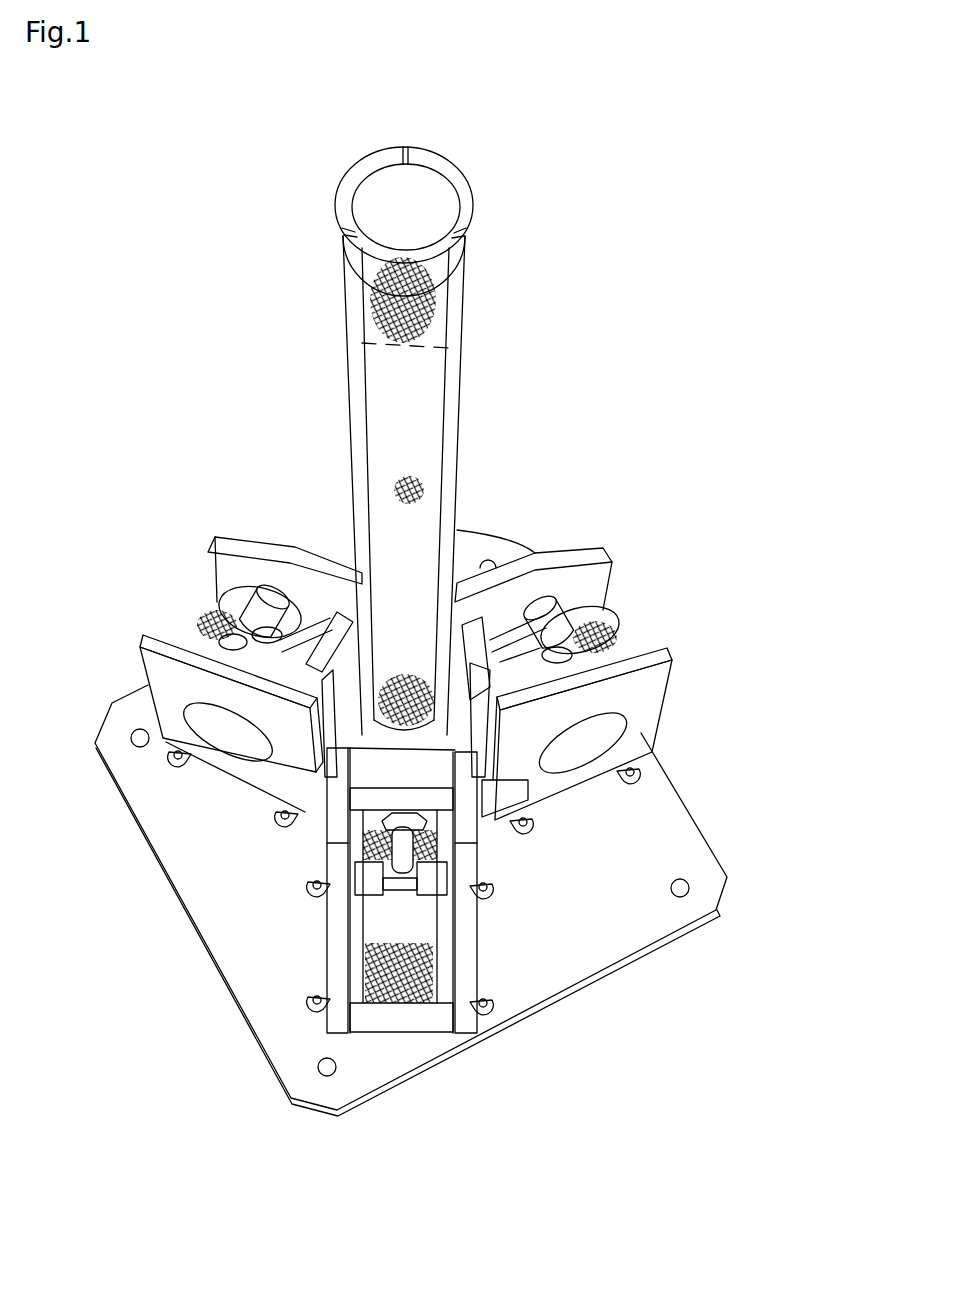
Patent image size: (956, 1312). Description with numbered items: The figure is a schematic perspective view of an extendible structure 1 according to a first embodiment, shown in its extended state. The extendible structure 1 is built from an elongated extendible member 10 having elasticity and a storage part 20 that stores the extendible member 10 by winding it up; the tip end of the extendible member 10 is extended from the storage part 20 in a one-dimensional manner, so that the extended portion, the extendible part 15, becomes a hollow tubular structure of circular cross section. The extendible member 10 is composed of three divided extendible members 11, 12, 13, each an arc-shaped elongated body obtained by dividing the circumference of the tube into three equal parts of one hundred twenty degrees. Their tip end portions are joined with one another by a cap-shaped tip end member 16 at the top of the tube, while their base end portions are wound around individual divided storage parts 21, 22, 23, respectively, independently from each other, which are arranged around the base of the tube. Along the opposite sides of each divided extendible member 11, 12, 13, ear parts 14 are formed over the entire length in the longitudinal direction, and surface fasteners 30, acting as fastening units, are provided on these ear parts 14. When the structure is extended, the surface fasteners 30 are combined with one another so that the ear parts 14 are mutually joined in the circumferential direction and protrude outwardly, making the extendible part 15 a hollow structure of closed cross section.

The extendible structure 1 is at (692, 232).
The extendible member 10 is at (468, 323).
The divided extendible member 11 is at (392, 467).
The divided extendible member 12 is at (400, 350).
The divided extendible member 13 is at (400, 350).
The ear part 14 is at (357, 388).
The extendible part 15 is at (337, 498).
The tip end member 16 is at (467, 202).
The storage part 20 is at (625, 562).
The divided storage part 21 is at (430, 1037).
The divided storage part 22 is at (645, 635).
The divided storage part 23 is at (178, 607).
The surface fastener 30 is at (452, 415).